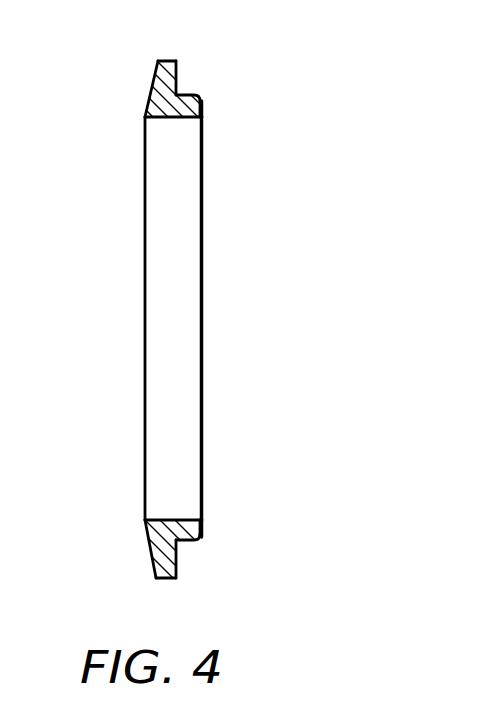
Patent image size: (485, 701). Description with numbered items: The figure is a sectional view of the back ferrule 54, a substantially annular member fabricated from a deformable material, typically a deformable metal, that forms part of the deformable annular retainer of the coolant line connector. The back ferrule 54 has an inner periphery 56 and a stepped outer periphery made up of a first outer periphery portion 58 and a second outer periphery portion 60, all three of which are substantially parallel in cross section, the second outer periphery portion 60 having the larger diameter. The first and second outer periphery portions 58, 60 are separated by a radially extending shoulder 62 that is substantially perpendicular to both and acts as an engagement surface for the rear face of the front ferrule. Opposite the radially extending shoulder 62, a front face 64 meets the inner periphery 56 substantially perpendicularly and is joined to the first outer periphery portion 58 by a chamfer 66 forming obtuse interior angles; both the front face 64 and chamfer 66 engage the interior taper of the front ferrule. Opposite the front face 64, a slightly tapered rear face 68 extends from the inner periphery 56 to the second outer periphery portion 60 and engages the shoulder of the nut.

The back ferrule 54 is at (293, 282).
The inner periphery 56 is at (172, 120).
The first outer periphery portion 58 is at (198, 98).
The second outer periphery portion 60 is at (168, 60).
The radially extending shoulder 62 is at (177, 77).
The front face 64 is at (201, 107).
The chamfer 66 is at (201, 103).
The rear face 68 is at (150, 93).